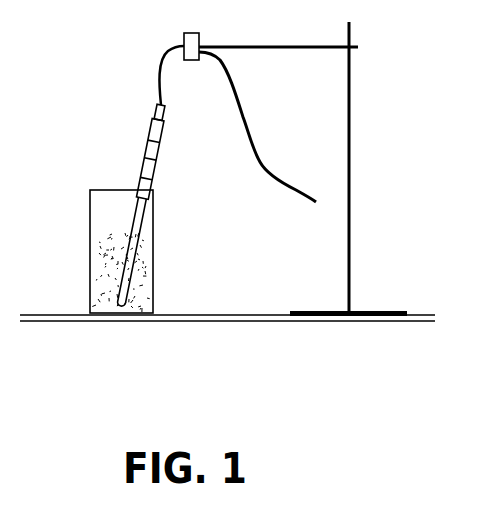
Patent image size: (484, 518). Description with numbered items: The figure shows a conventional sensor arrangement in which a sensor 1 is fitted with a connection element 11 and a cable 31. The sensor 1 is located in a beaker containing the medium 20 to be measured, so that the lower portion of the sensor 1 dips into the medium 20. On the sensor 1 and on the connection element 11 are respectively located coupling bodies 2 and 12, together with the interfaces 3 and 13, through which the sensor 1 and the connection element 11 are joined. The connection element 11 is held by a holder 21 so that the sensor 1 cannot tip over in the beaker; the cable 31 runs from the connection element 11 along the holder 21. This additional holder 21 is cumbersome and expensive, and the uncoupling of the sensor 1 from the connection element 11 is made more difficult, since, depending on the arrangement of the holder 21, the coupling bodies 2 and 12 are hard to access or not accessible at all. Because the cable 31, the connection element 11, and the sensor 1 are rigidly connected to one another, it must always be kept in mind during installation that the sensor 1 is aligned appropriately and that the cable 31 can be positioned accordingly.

The sensor 1 is at (125, 174).
The connection element 11 is at (140, 118).
The coupling body 12 is at (150, 181).
The interface 13 is at (130, 165).
The coupling body 2 is at (155, 140).
The interface 3 is at (137, 137).
The medium 20 is at (145, 295).
The holder 21 is at (350, 218).
The cable 31 is at (253, 121).